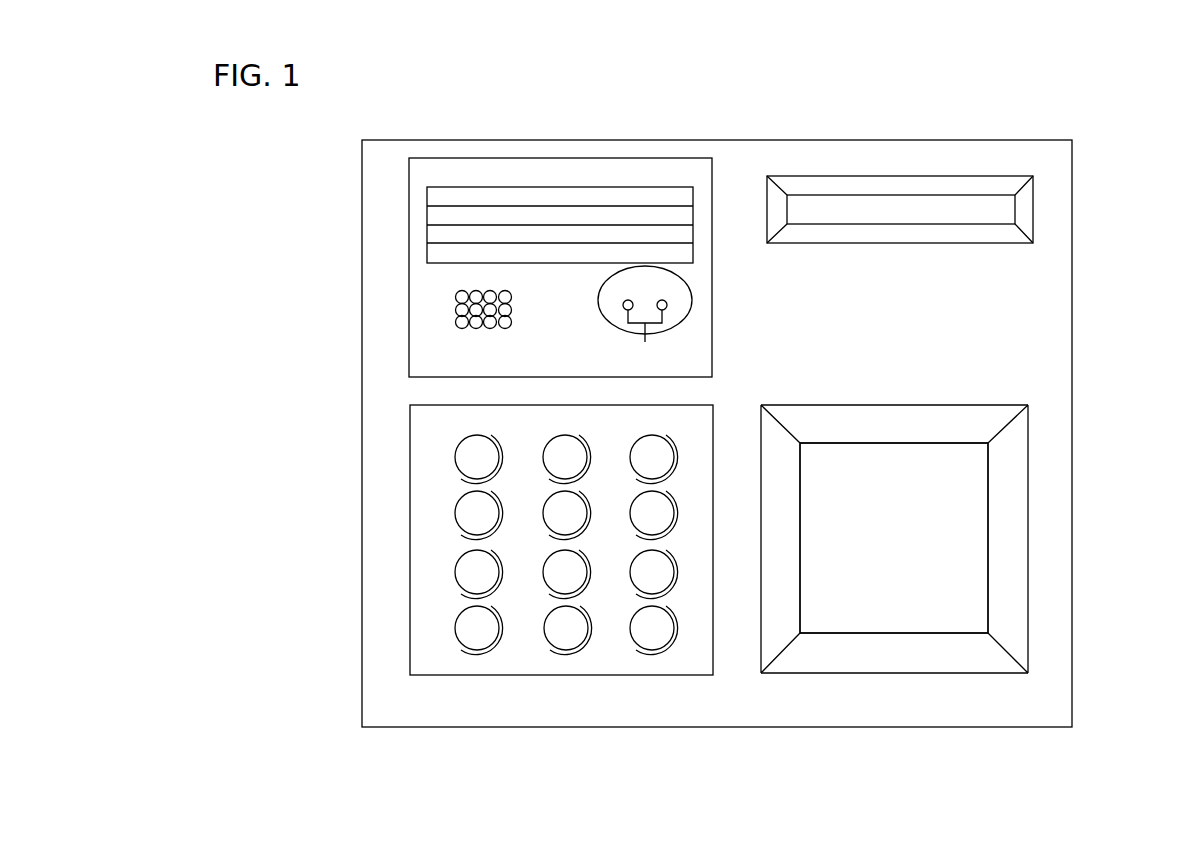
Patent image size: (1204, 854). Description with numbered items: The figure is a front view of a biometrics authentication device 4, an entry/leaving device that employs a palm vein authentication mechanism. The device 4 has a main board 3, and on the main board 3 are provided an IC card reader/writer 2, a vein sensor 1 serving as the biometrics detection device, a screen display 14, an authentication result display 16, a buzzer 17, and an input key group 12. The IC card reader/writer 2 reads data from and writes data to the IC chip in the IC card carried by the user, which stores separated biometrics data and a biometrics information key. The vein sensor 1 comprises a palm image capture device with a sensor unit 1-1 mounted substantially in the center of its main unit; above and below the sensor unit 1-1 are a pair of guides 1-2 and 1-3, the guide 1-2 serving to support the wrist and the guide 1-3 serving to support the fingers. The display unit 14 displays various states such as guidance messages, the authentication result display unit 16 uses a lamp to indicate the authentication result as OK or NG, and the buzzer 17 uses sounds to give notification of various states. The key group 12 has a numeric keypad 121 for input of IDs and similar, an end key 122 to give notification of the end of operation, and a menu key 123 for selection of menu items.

The vein sensor 1 is at (897, 466).
The sensor unit 1-1 is at (948, 552).
The guide 1-2 is at (968, 660).
The guide 1-3 is at (957, 418).
The IC card reader/writer 2 is at (1027, 203).
The main board 3 is at (1043, 270).
The biometrics authentication device 4 is at (979, 107).
The input key group 12 is at (288, 512).
The numeric keypad 121 is at (452, 549).
The end key 122 is at (449, 630).
The menu key 123 is at (632, 655).
The screen display 14 is at (434, 218).
The authentication result display 16 is at (594, 321).
The buzzer 17 is at (446, 305).